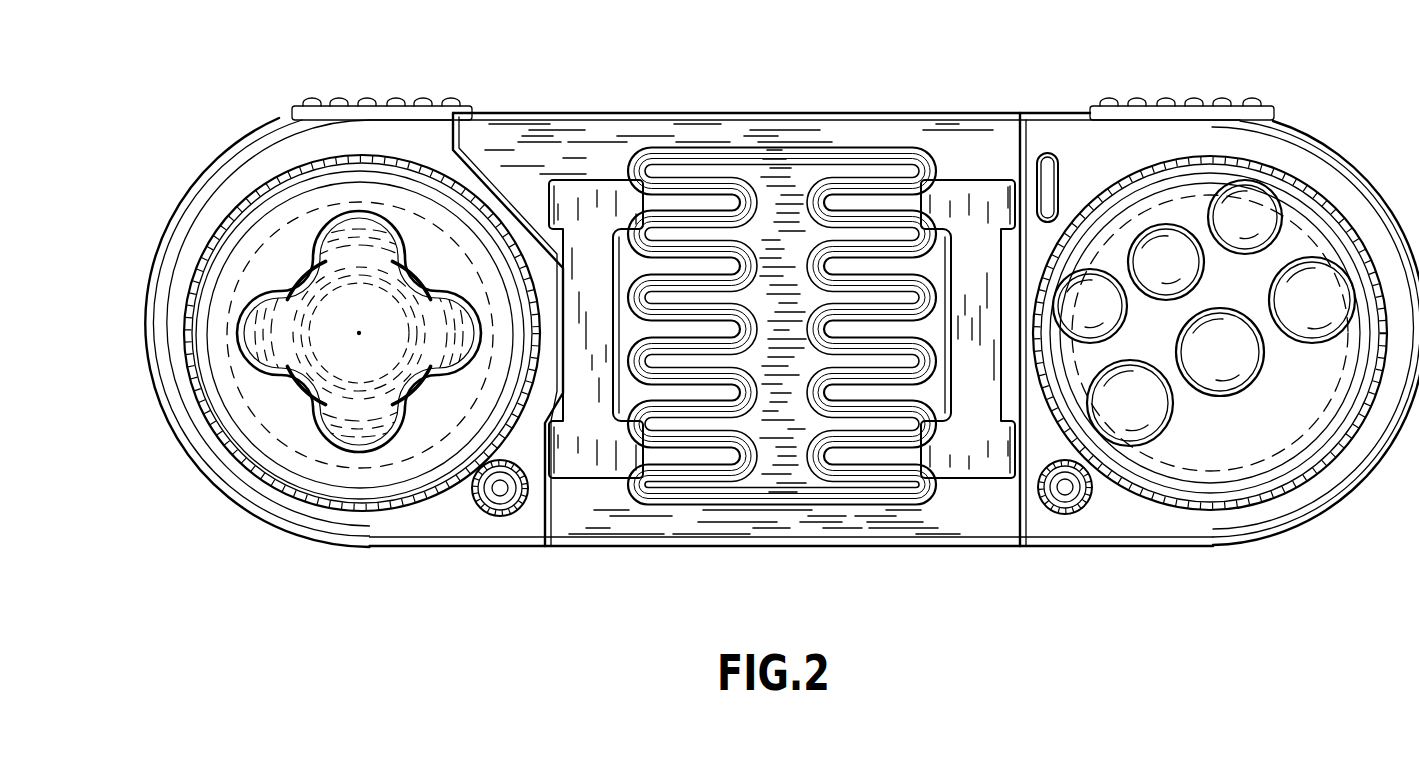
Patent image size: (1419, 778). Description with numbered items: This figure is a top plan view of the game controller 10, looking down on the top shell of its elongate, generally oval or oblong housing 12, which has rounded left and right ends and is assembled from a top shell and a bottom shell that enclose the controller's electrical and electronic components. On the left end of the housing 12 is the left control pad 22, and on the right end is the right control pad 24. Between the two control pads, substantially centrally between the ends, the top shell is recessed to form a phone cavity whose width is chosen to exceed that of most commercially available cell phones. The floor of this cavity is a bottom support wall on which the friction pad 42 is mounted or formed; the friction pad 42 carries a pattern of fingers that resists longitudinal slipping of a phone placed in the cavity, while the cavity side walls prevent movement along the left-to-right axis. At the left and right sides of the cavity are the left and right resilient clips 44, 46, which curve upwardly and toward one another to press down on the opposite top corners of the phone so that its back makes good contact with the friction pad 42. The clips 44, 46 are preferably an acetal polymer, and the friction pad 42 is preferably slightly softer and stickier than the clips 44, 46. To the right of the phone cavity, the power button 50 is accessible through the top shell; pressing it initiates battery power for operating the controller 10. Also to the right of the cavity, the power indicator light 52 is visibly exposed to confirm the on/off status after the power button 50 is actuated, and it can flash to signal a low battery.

The game controller 10 is at (224, 89).
The housing 12 is at (146, 318).
The left control pad 22 is at (372, 217).
The right control pad 24 is at (1312, 222).
The friction pad 42 is at (782, 489).
The left resilient clip 44 is at (603, 468).
The right resilient clip 46 is at (965, 187).
The power button 50 is at (1081, 505).
The power indicator light 52 is at (1048, 152).